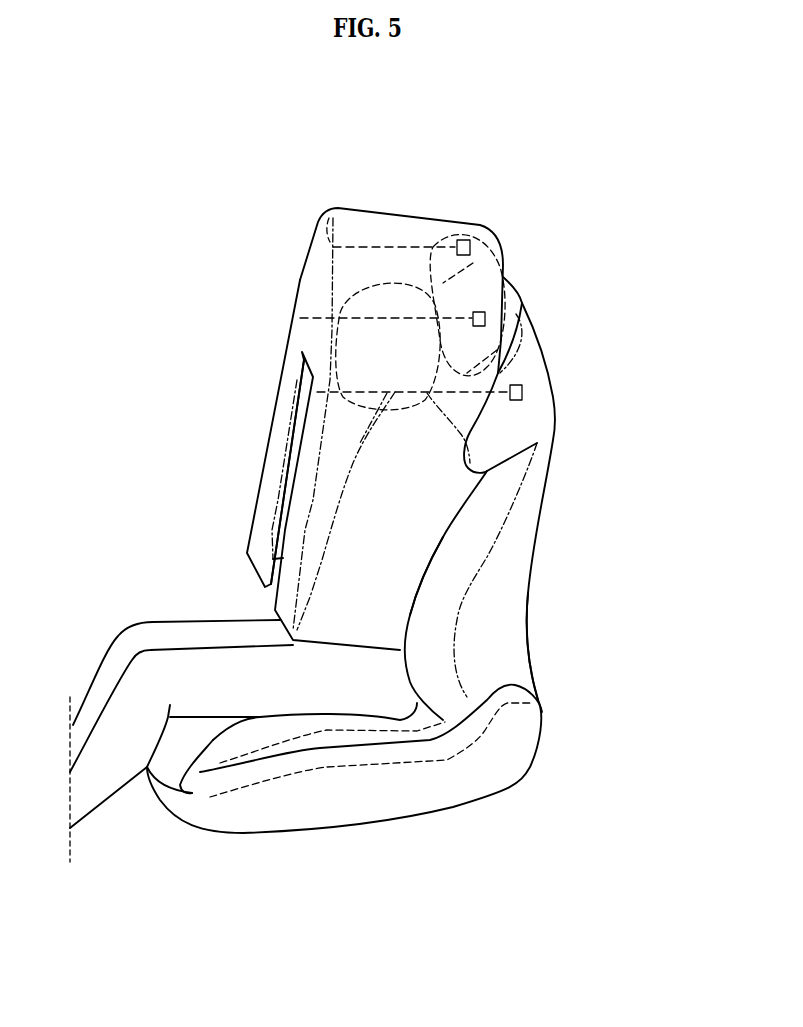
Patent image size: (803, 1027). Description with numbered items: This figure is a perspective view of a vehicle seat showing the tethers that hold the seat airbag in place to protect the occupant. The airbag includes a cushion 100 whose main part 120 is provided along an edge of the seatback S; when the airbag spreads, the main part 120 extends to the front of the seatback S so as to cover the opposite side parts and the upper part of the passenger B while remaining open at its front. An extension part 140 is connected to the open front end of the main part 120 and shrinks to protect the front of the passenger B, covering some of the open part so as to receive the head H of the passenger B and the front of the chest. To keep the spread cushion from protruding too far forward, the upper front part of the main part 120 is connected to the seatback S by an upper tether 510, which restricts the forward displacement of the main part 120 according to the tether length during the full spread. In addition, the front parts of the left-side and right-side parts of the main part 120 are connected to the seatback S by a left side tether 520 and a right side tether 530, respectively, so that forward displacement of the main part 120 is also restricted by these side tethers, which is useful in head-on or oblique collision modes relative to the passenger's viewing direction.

The cushion 100 is at (530, 262).
The main part 120 is at (377, 207).
The extension part 140 is at (280, 442).
The upper tether 510 is at (410, 246).
The left side tether 520 is at (475, 421).
The right side tether 530 is at (385, 283).
The head H is at (318, 348).
The passenger B is at (430, 515).
The seatback S is at (517, 573).